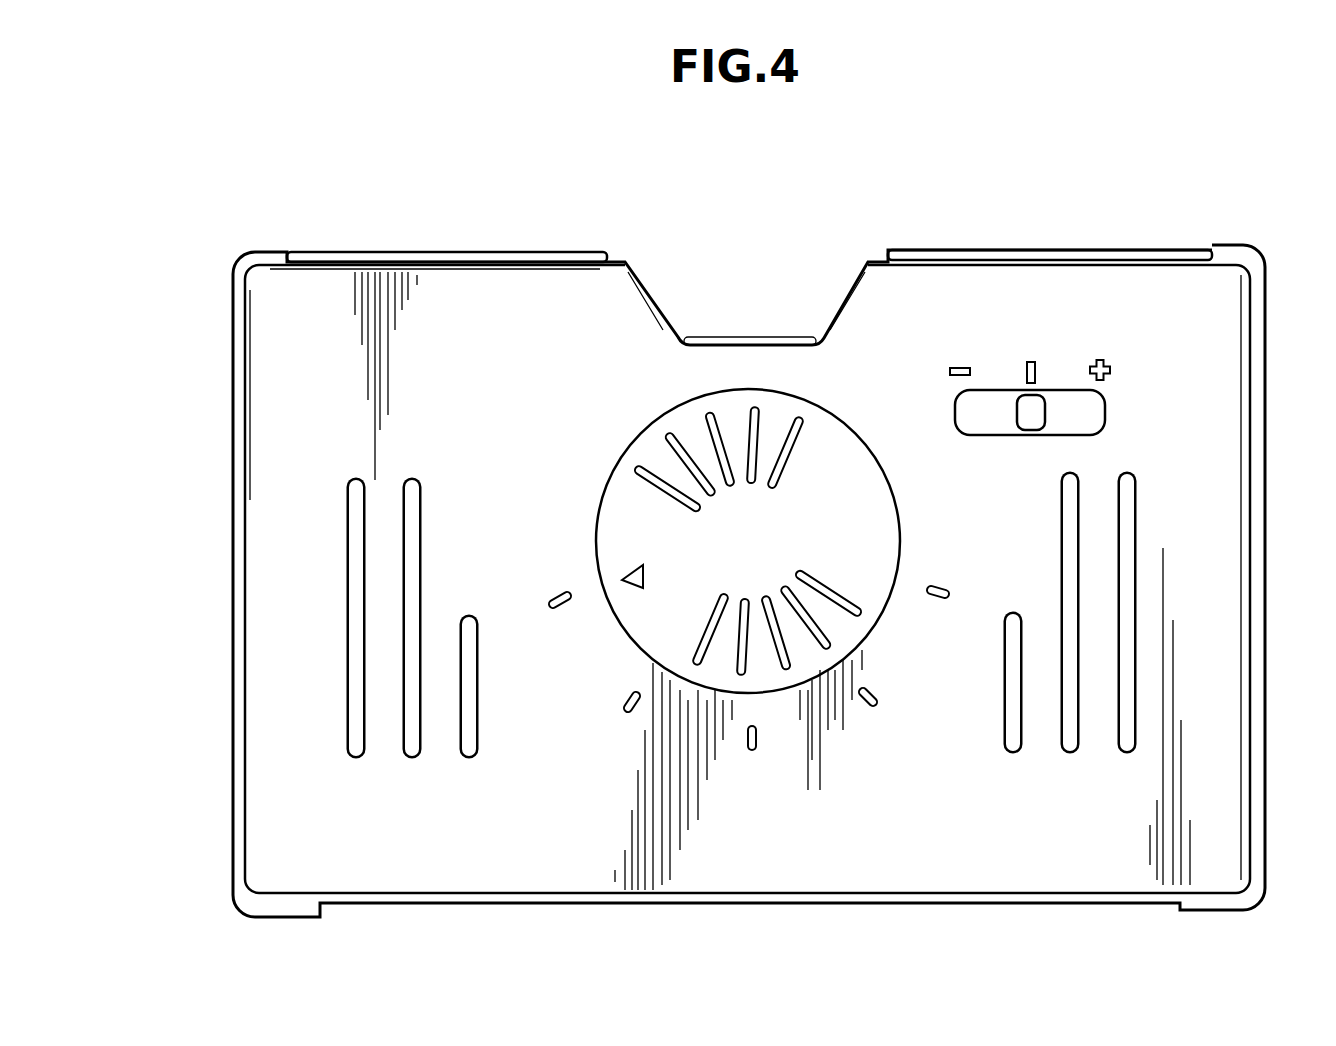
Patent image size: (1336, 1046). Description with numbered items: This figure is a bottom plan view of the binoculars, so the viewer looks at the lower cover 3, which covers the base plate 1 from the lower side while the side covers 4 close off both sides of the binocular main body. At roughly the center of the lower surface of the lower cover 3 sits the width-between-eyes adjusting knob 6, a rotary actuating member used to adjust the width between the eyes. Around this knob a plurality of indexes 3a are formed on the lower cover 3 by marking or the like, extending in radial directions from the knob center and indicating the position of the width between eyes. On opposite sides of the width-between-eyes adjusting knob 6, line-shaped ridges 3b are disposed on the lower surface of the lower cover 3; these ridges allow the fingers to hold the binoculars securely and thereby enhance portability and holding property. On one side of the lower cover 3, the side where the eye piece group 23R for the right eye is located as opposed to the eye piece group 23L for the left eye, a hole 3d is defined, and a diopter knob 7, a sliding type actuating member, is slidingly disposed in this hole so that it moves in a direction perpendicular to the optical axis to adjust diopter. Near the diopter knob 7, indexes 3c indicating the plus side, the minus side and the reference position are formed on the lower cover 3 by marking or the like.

The base plate 1 is at (440, 255).
The lower cover 3 is at (1222, 360).
The indexes 3a is at (621, 702).
The line-shaped ridges 3b is at (356, 760).
The indexes 3c is at (1097, 360).
The hole 3d is at (1093, 418).
The side covers 4 is at (233, 497).
The width-between-eyes adjusting knob 6 is at (848, 462).
The diopter knob 7 is at (1030, 412).
The eye piece group for the left eye 23L is at (395, 250).
The eye piece group for the right eye 23R is at (1112, 250).